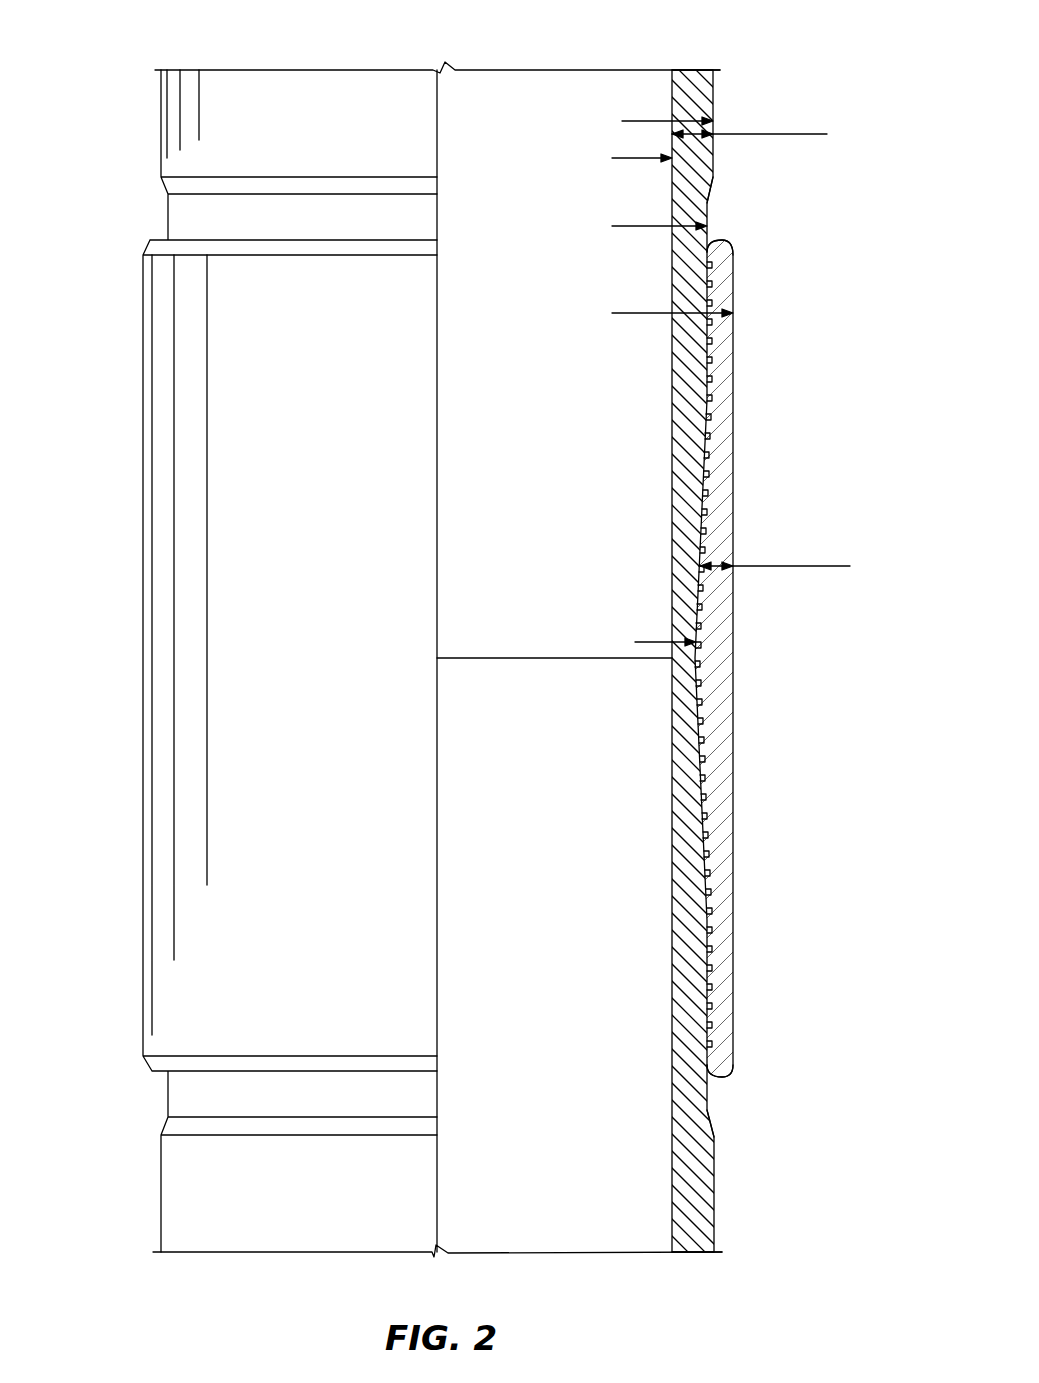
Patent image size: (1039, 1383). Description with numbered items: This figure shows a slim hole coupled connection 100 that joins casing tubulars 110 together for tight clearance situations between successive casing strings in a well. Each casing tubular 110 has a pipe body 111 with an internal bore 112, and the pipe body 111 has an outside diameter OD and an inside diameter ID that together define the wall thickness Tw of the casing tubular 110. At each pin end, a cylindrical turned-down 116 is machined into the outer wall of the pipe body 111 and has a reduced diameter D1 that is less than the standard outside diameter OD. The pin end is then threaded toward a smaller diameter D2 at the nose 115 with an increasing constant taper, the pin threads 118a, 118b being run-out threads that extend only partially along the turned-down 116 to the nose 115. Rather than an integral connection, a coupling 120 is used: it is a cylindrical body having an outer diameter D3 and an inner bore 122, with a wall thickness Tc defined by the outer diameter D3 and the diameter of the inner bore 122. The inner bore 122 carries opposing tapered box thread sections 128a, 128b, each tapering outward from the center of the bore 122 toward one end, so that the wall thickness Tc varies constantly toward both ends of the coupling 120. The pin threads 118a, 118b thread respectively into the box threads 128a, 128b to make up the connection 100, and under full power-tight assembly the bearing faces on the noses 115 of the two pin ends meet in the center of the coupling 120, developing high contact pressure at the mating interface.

The slim hole coupled connection 100 is at (64, 76).
The casing tubular 110 is at (161, 147).
The pipe body 111 is at (697, 87).
The internal bore 112 is at (672, 70).
The nose 115 is at (512, 660).
The turned-down 116 is at (707, 203).
The pin thread 118a is at (733, 356).
The pin thread 118b is at (708, 933).
The coupling 120 is at (733, 612).
The inner bore 122 is at (700, 700).
The box thread section 128a is at (703, 474).
The box thread section 128b is at (700, 838).
The outside diameter OD is at (645, 124).
The inside diameter ID is at (626, 162).
The reduced diameter D1 is at (644, 232).
The smaller diameter D2 is at (647, 640).
The outer diameter D3 is at (657, 319).
The wall thickness Tw is at (768, 139).
The wall thickness Tc is at (790, 571).